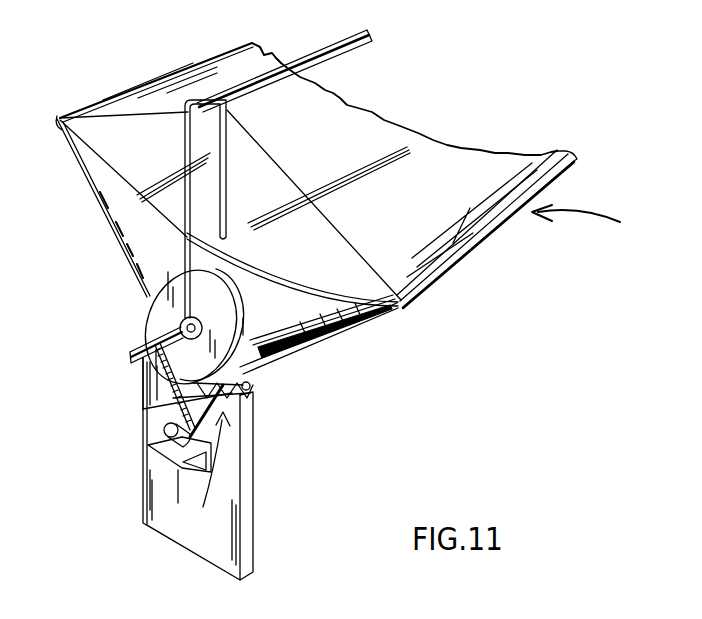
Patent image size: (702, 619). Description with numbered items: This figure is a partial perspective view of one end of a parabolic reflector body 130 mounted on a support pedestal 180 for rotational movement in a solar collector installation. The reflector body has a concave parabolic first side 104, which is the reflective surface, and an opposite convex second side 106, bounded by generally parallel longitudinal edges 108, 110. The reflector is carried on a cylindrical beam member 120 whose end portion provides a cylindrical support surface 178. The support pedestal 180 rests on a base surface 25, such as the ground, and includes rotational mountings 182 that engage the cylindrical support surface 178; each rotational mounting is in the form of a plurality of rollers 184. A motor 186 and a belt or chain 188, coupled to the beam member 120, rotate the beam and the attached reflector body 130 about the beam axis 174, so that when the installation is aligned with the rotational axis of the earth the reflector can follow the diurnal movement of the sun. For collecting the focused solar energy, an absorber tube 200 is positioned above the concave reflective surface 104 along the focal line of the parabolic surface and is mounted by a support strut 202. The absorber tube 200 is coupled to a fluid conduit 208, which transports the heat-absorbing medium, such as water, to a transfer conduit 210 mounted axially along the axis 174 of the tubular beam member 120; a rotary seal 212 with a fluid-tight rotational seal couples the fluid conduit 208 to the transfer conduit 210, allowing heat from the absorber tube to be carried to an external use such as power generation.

The base surface 25 is at (152, 592).
The concave parabolic first side 104 is at (318, 255).
The convex second side 106 is at (340, 311).
The longitudinal edge 108 is at (223, 56).
The longitudinal edge 110 is at (548, 180).
The cylindrical beam member 120 is at (153, 300).
The parabolic reflector body 130 is at (588, 230).
The axis 174 is at (108, 372).
The cylindrical support surface 178 is at (262, 352).
The support pedestal 180 is at (233, 472).
The rotational mounting 182 is at (207, 474).
The roller 184 is at (243, 386).
The motor 186 is at (170, 432).
The belt or chain 188 is at (172, 404).
The absorber tube 200 is at (352, 52).
The support strut 202 is at (225, 163).
The fluid conduit 208 is at (185, 153).
The transfer conduit 210 is at (132, 372).
The rotary seal 212 is at (172, 321).